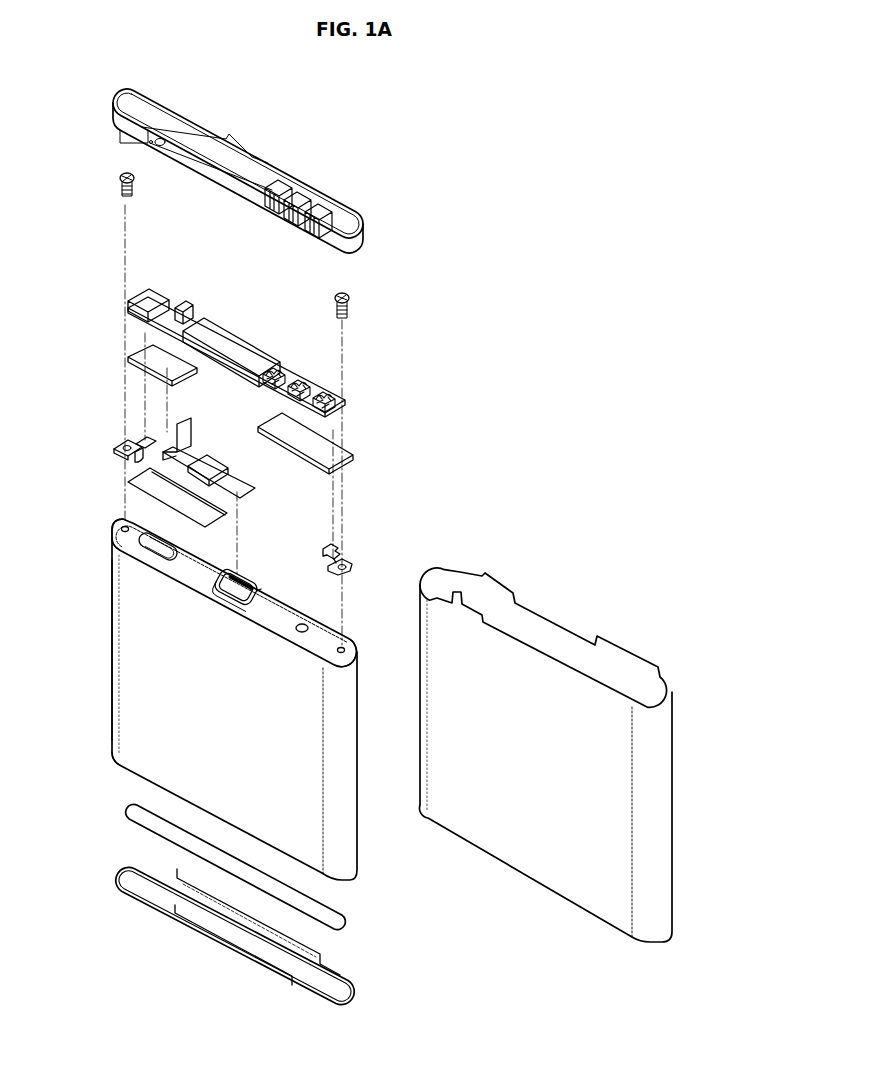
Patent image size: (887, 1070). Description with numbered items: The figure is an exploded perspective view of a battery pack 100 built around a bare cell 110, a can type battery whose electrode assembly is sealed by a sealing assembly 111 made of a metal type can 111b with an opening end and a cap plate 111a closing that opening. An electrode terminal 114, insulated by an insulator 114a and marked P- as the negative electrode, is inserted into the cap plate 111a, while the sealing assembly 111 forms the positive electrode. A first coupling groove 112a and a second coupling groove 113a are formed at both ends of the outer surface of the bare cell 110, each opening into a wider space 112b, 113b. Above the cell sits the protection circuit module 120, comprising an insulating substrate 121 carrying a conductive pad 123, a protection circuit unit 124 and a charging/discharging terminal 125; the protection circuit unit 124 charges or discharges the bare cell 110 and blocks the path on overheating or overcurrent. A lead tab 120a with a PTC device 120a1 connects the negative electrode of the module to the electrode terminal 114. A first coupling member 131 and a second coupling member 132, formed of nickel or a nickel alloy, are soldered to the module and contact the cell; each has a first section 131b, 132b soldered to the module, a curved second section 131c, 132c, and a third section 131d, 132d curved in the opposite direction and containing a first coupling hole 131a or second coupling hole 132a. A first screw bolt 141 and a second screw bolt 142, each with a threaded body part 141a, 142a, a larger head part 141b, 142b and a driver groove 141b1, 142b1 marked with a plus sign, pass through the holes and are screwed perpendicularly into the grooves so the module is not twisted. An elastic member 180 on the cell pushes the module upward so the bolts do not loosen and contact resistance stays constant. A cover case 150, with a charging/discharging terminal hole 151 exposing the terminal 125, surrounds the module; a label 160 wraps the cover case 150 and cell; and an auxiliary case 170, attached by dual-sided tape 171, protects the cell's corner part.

The battery pack 100 is at (585, 166).
The bare cell 110 is at (216, 689).
The sealing assembly 111 is at (193, 699).
The cap plate 111a is at (122, 549).
The can 111b is at (121, 603).
The first coupling groove 112a is at (356, 655).
The space 112b is at (346, 647).
The second coupling groove 113a is at (120, 541).
The space 113b is at (123, 528).
The electrode terminal 114 is at (268, 573).
The insulator 114a is at (263, 586).
The negative electrode P- is at (239, 575).
The protection circuit module 120 is at (254, 336).
The lead tab 120a is at (223, 458).
The PTC device 120a1 is at (226, 449).
The insulating substrate 121 is at (344, 403).
The conductive pad 123 is at (186, 305).
The protection circuit unit 124 is at (150, 296).
The charging/discharging terminal 125 is at (323, 400).
The first coupling member 131 is at (347, 555).
The first coupling hole 131a is at (353, 566).
The first section 131b is at (337, 547).
The second section 131c is at (342, 556).
The third section 131d is at (347, 574).
The second coupling member 132 is at (106, 444).
The second coupling hole 132a is at (115, 447).
The first section 132b is at (141, 441).
The second section 132c is at (138, 459).
The third section 132d is at (118, 453).
The first screw bolt 141 is at (334, 295).
The body part 141a is at (336, 306).
The head part 141b is at (334, 310).
The groove 141b1 is at (364, 313).
The second screw bolt 142 is at (117, 169).
The body part 142a is at (121, 189).
The head part 142b is at (118, 181).
The groove 142b1 is at (148, 190).
The cover case 150 is at (238, 163).
The charging/discharging terminal hole 151 is at (325, 208).
The label 160 is at (558, 621).
The auxiliary case 170 is at (110, 887).
The dual-sided tape 171 is at (123, 811).
The elastic member 180 is at (124, 359).